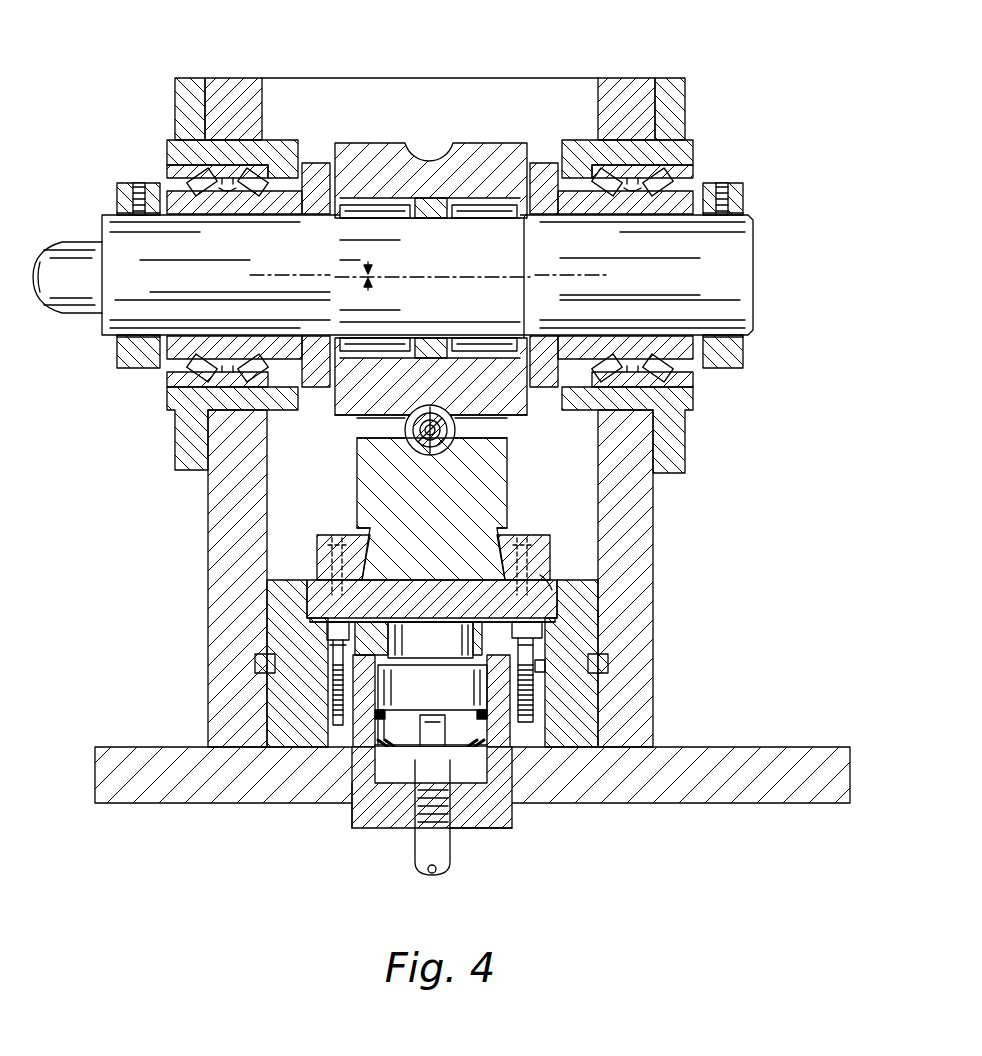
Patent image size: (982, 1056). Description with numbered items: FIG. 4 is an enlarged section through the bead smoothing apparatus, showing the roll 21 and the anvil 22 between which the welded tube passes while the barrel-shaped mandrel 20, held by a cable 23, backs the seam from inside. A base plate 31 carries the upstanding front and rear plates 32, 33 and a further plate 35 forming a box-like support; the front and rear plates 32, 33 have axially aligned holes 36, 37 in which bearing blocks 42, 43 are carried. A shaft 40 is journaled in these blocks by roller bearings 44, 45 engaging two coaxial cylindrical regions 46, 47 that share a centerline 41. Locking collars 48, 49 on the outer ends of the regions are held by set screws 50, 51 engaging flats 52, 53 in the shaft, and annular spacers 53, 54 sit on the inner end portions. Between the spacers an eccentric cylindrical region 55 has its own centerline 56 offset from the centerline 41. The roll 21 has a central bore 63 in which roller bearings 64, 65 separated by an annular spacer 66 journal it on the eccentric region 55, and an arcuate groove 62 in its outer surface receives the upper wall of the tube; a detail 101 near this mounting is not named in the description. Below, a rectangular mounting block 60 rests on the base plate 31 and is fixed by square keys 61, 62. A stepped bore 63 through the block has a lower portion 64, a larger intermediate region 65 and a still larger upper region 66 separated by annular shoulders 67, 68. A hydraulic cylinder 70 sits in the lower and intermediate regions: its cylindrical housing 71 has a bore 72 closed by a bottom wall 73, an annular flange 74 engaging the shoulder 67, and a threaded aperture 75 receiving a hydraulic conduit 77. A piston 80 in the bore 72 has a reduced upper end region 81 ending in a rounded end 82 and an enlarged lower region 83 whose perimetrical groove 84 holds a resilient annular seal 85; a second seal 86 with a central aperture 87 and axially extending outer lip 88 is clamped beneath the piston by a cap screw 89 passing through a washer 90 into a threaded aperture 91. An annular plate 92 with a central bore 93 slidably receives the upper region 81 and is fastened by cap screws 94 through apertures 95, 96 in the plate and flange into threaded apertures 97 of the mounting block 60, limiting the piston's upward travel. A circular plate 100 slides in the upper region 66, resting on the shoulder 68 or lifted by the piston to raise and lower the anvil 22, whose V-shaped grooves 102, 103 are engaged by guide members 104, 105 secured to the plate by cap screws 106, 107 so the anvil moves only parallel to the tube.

The mandrel 20 is at (457, 432).
The roll 21 is at (335, 413).
The anvil block 22 is at (505, 470).
The cable 23 is at (405, 429).
The base plate 31 is at (772, 802).
The front plate 32 is at (630, 95).
The rear plate 33 is at (245, 90).
The upstanding plate 35 is at (420, 77).
The hole 36 is at (600, 142).
The hole 37 is at (263, 144).
The shaft 40 is at (755, 281).
The centerline 41 is at (282, 275).
The bearing block 42 is at (680, 92).
The bearing block 43 is at (198, 77).
The roller bearing 44 is at (610, 204).
The roller bearing 45 is at (212, 206).
The cylindrical region 46 is at (628, 292).
The cylindrical region 47 is at (176, 292).
The locking collar 48 is at (745, 355).
The locking collar 49 is at (118, 357).
The set screw 50 is at (730, 186).
The set screw 51 is at (135, 186).
The flat 52 is at (110, 215).
The annular spacer 53 is at (543, 166).
The annular spacer 54 is at (316, 166).
The eccentric cylindrical region 55 is at (440, 272).
The centerline 56 is at (520, 296).
The mounting block 60 is at (655, 612).
The square key 61 is at (608, 664).
The arcuate groove 62 is at (428, 148).
The stepped bore 63 is at (482, 348).
The lower portion of stepped bore 64 is at (488, 214).
The intermediate region of stepped bore 65 is at (358, 214).
The upper region of stepped bore 66 is at (430, 218).
The annular shoulder 67 is at (535, 699).
The annular shoulder 68 is at (540, 641).
The hydraulic cylinder 70 is at (352, 828).
The cylindrical housing 71 is at (352, 795).
The bore 72 is at (487, 702).
The bottom wall 73 is at (478, 822).
The annular flange 74 is at (540, 677).
The threaded aperture 75 is at (418, 832).
The hydraulic conduit 77 is at (445, 868).
The piston 80 is at (312, 751).
The upper end region 81 is at (436, 646).
The rounded end 82 is at (475, 580).
The lower end region 83 is at (426, 686).
The perimetrical groove 84 is at (380, 718).
The resilient annular seal 85 is at (384, 712).
The resilient annular seal 86 is at (430, 765).
The central aperture 87 is at (490, 716).
The outer lip 88 is at (396, 788).
The cap screw 89 is at (458, 782).
The washer 90 is at (487, 760).
The threaded aperture 91 is at (424, 782).
The annular plate 92 is at (470, 646).
The central bore 93 is at (398, 645).
The cap screws 94 is at (527, 621).
The aperture 95 is at (332, 647).
The aperture 96 is at (334, 679).
The threaded aperture 97 is at (334, 711).
The circular plate 100 is at (382, 600).
The pin bore 101 is at (420, 448).
The V-shaped groove 102 is at (508, 529).
The V-shaped groove 103 is at (350, 529).
The guide member 104 is at (546, 556).
The guide member 105 is at (320, 555).
The cap screw 106 is at (533, 537).
The cap screw 107 is at (330, 535).